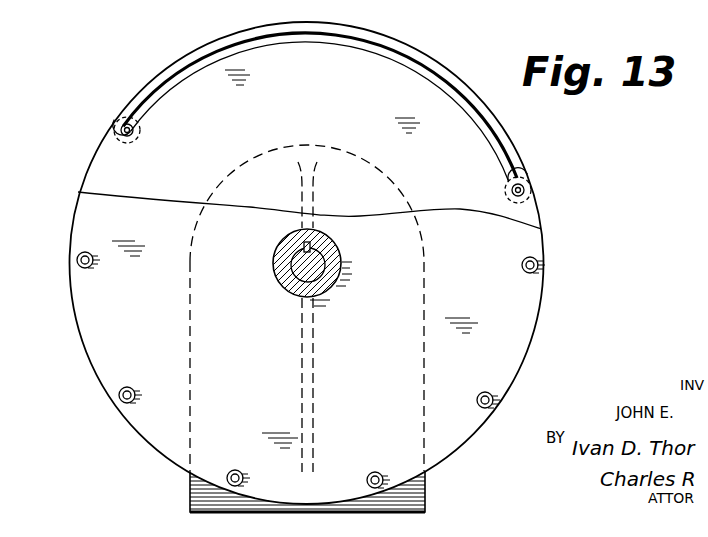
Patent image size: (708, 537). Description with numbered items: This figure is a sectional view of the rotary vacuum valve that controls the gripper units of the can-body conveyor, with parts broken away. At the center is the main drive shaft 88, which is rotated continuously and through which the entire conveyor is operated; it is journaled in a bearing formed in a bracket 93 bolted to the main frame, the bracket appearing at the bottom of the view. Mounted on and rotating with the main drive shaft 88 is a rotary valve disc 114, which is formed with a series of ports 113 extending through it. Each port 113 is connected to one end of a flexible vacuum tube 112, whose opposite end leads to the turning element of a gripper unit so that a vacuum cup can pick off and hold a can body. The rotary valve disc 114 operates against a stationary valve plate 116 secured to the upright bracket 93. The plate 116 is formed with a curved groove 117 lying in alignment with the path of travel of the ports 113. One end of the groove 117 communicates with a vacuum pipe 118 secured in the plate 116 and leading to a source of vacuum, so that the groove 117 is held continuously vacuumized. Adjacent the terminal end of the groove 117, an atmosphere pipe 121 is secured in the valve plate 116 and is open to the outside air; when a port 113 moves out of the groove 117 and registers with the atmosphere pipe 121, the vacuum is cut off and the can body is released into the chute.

The main drive shaft 88 is at (318, 266).
The bracket 93 is at (200, 493).
The flexible vacuum tube 112 is at (89, 254).
The port 113 is at (78, 264).
The rotary valve disc 114 is at (93, 308).
The stationary valve plate 116 is at (113, 169).
The curved groove 117 is at (280, 40).
The vacuum pipe 118 is at (120, 130).
The atmosphere pipe 121 is at (525, 190).